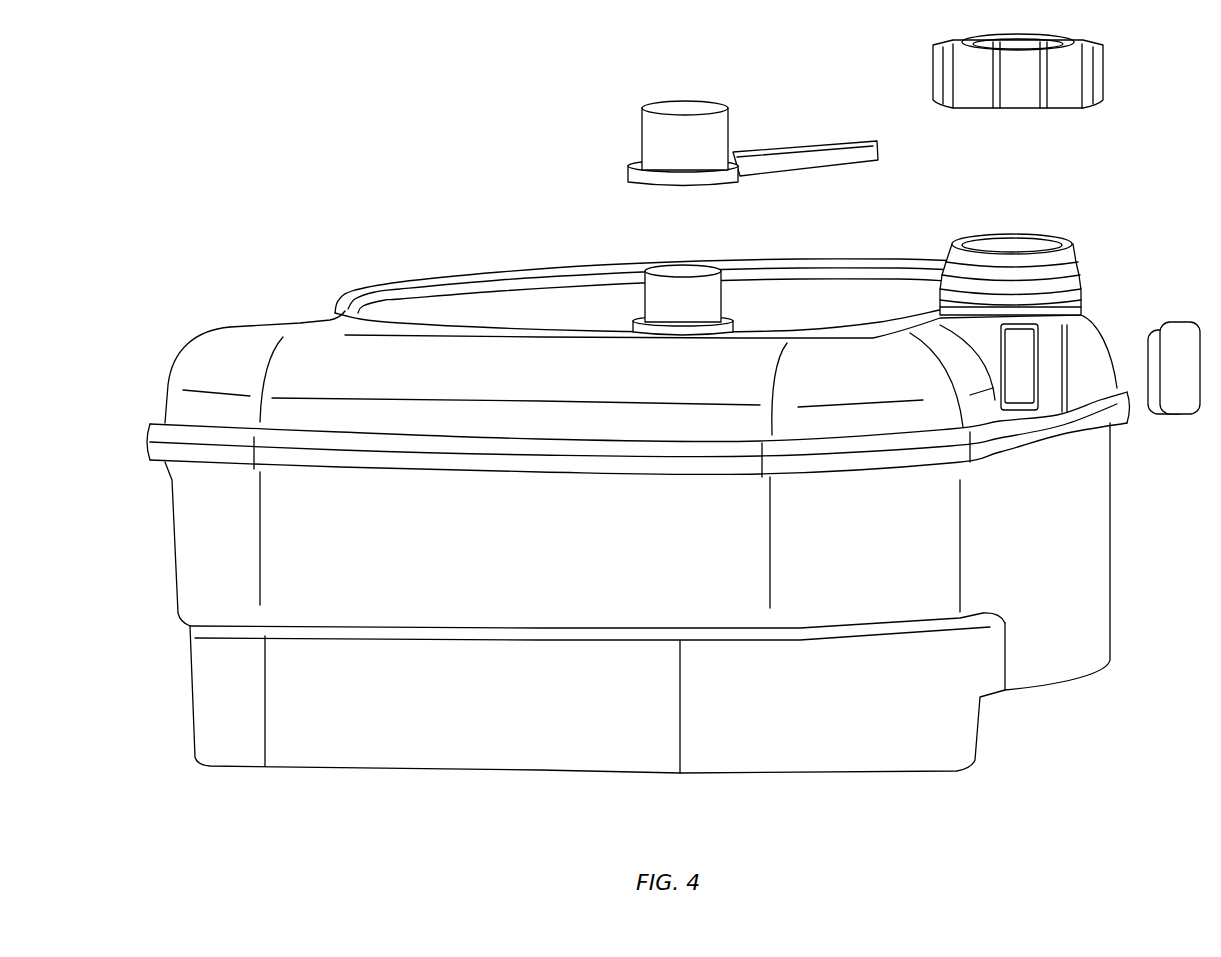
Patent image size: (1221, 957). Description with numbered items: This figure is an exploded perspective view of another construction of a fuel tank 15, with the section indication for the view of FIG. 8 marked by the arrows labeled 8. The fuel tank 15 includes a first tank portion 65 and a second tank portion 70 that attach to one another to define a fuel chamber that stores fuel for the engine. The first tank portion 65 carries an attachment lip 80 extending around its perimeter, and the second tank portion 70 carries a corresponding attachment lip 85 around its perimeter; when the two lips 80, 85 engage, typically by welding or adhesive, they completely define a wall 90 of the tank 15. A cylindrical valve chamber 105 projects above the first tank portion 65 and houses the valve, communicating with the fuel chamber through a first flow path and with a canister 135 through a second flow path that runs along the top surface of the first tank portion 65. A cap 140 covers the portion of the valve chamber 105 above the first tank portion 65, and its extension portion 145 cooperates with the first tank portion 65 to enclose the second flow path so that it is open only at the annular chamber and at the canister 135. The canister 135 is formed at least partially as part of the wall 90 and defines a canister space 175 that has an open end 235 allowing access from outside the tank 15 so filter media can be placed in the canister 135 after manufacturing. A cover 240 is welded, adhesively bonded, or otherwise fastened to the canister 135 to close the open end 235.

The fuel tank 15 is at (305, 243).
The first tank portion 65 is at (215, 348).
The second tank portion 70 is at (295, 747).
The attachment lip 80 is at (290, 440).
The attachment lip 85 is at (307, 460).
The wall 90 is at (480, 385).
The valve chamber 105 is at (657, 302).
The canister 135 is at (993, 338).
The cap 140 is at (687, 104).
The extension portion 145 is at (812, 153).
The canister space 175 is at (1030, 385).
The open end 235 is at (1005, 348).
The cover 240 is at (1187, 343).
The section view indicator 8 is at (627, 190).